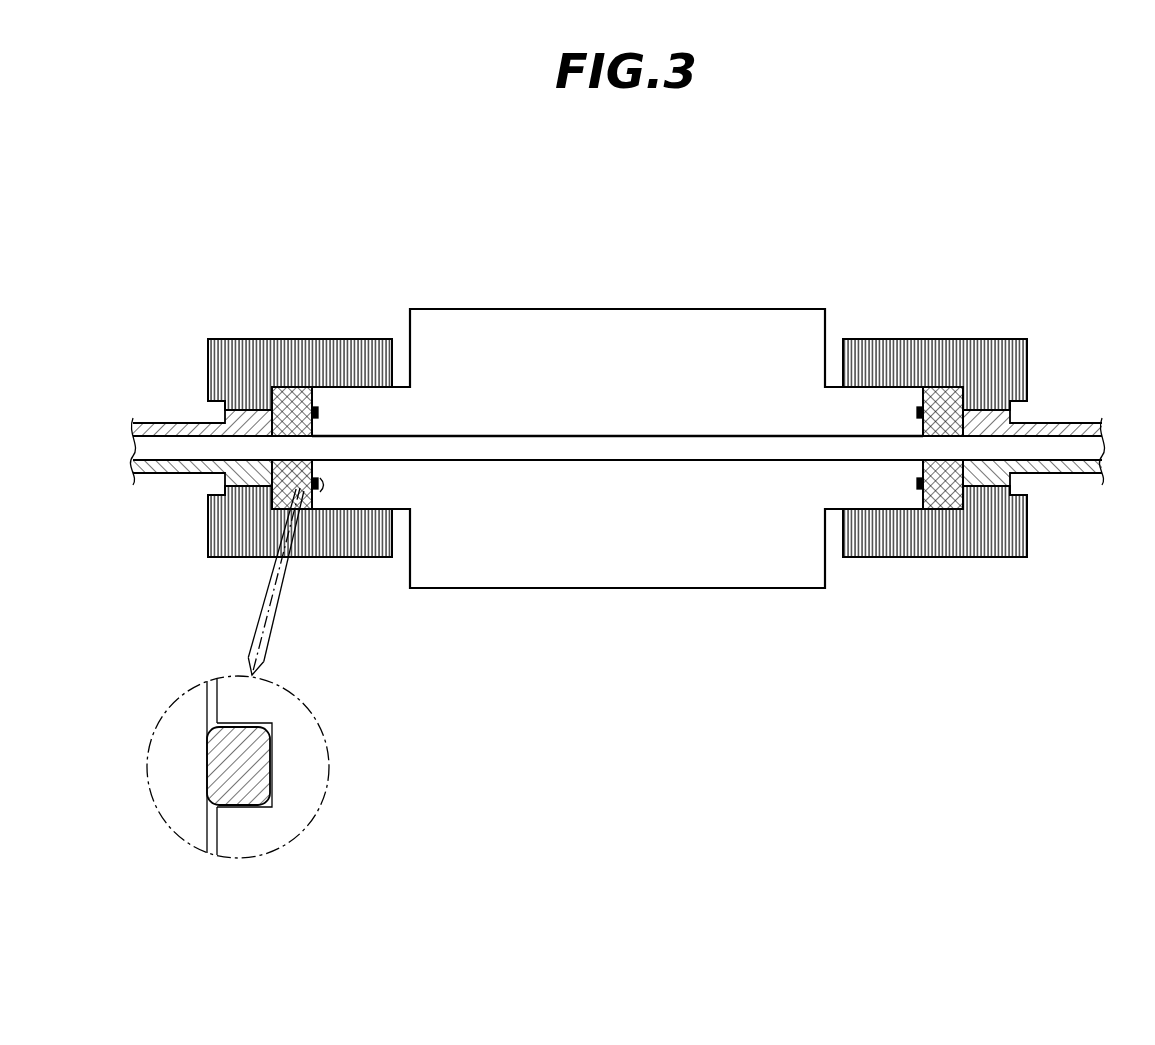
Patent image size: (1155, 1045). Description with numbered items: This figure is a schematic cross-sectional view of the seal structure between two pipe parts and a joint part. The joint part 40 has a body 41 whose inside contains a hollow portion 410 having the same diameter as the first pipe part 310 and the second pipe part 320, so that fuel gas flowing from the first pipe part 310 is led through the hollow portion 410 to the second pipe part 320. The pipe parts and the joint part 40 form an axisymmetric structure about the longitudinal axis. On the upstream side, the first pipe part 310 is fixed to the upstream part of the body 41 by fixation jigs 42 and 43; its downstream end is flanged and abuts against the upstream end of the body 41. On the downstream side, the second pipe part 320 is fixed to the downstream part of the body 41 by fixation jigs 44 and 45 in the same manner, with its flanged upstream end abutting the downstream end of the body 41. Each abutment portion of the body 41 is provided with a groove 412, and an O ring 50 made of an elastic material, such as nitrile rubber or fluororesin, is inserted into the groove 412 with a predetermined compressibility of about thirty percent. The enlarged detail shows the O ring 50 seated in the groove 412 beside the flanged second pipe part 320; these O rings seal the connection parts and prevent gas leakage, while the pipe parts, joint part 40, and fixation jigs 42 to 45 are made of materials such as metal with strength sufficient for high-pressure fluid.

The joint part 40 is at (703, 256).
The body 41 is at (778, 309).
The hollow portion 410 is at (543, 447).
The groove 412 is at (273, 805).
The fixation jig 42 is at (1005, 416).
The fixation jig 43 is at (987, 339).
The fixation jig 44 is at (293, 390).
The fixation jig 45 is at (248, 360).
The O ring 50 is at (255, 762).
The first pipe part 310 is at (1066, 424).
The second pipe part 320 is at (170, 423).